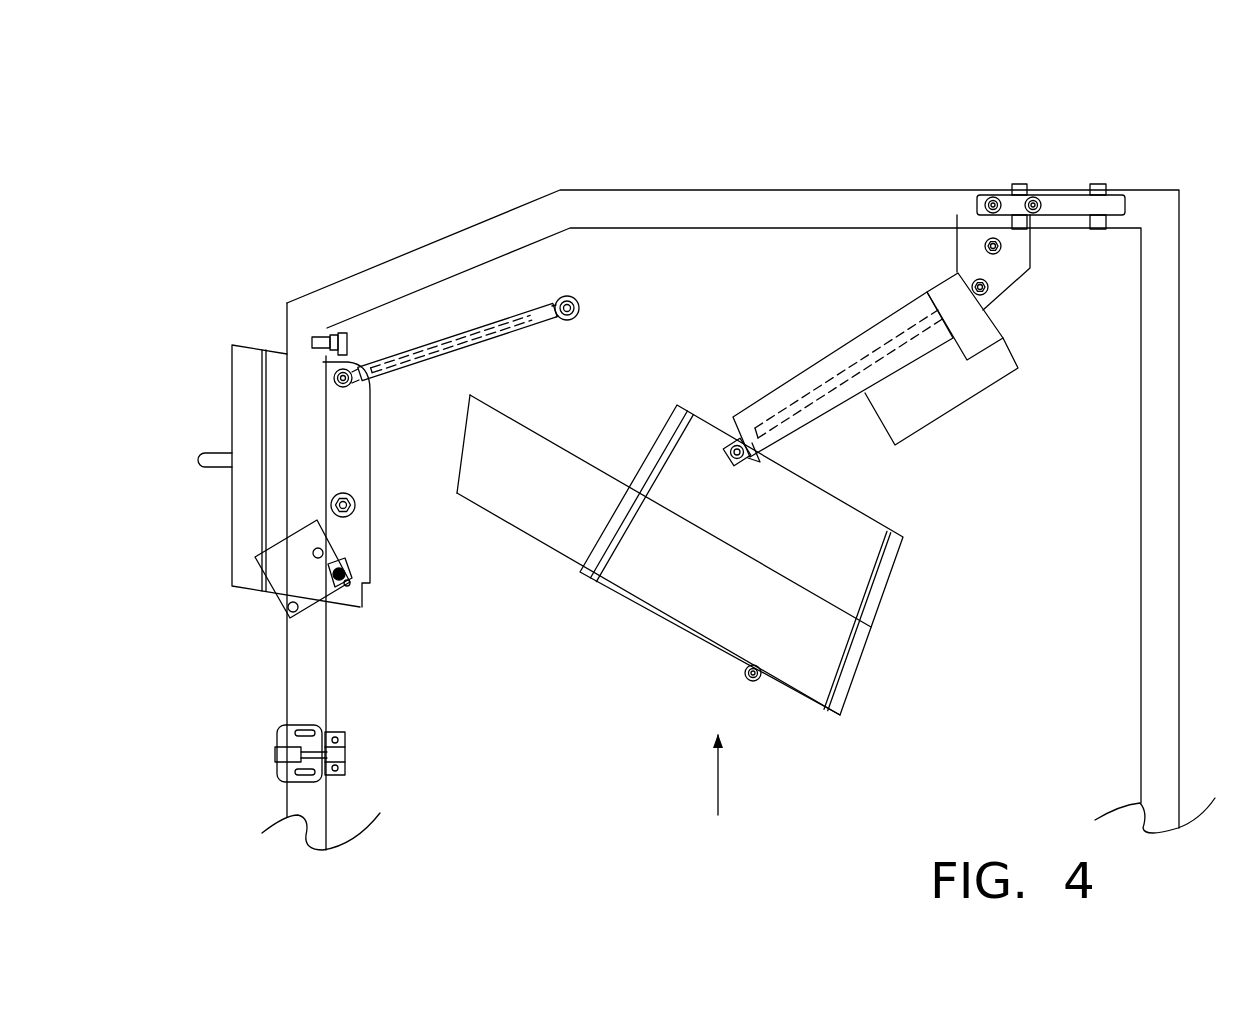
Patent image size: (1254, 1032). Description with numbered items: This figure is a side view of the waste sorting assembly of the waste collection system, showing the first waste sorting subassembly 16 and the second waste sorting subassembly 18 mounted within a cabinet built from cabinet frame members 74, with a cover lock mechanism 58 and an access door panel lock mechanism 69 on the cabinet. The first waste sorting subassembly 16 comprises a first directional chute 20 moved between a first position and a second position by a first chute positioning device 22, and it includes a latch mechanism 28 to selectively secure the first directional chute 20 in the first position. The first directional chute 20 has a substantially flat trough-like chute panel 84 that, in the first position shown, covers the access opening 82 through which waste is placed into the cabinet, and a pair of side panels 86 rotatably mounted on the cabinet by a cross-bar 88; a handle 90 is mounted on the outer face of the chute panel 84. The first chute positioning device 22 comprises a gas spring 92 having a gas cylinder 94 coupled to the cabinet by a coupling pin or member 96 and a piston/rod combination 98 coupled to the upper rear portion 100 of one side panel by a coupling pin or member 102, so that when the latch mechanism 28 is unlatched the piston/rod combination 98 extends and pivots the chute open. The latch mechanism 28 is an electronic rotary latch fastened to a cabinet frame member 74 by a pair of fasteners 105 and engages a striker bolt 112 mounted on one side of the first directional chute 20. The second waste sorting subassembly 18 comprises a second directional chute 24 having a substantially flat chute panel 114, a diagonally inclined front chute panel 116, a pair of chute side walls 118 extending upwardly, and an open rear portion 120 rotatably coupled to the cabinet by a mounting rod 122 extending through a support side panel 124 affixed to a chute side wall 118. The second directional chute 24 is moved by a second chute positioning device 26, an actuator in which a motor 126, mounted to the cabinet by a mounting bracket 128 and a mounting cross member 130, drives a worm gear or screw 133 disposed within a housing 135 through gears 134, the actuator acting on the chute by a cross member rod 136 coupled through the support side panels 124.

The first waste sorting subassembly 16 is at (658, 538).
The second waste sorting subassembly 18 is at (812, 599).
The first directional chute 20 is at (227, 444).
The first chute positioning device 22 is at (455, 227).
The second directional chute 24 is at (725, 796).
The second chute positioning device 26 is at (856, 385).
The latch mechanism 28 is at (258, 608).
The cover lock mechanism 58 is at (336, 332).
The access door panel lock mechanism 69 is at (343, 757).
The cabinet frame member 74 is at (874, 212).
The access opening 82 is at (222, 340).
The chute panel 84 is at (226, 372).
The side panel 86 is at (344, 437).
The cross-bar 88 is at (349, 514).
The handle 90 is at (199, 462).
The gas spring 92 is at (444, 316).
The gas cylinder 94 is at (535, 312).
The coupling pin or member 96 is at (572, 297).
The piston/rod combination 98 is at (432, 352).
The upper rear portion 100 is at (398, 484).
The coupling pin or member 102 is at (338, 372).
The fastener 105 is at (313, 553).
The striker bolt 112 is at (347, 588).
The chute panel 114 is at (523, 537).
The front chute panel 116 is at (466, 412).
The chute side wall 118 is at (552, 473).
The open rear portion 120 is at (840, 546).
The mounting rod 122 is at (753, 682).
The support side panel 124 is at (781, 506).
The motor 126 is at (948, 400).
The mounting bracket 128 is at (1014, 264).
The mounting cross member 130 is at (1067, 196).
The worm gear or screw 133 is at (837, 366).
The gear 134 is at (936, 288).
The housing 135 is at (781, 386).
The cross member rod 136 is at (730, 442).